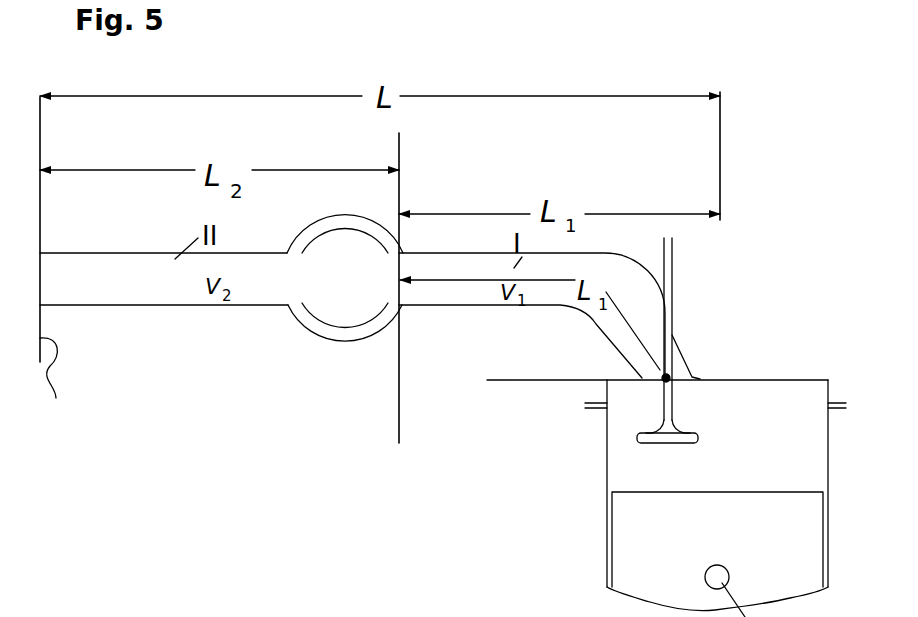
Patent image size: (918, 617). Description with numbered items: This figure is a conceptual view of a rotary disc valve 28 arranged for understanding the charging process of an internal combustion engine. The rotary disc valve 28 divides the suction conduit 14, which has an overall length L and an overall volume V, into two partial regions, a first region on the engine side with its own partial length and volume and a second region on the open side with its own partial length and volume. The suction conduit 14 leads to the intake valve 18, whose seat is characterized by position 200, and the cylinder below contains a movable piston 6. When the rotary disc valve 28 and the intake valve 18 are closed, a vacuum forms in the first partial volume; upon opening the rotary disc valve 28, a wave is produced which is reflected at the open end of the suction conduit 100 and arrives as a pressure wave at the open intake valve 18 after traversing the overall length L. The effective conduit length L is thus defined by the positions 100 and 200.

The open end of the suction conduit 100 is at (46, 392).
The suction conduit 14 is at (198, 314).
The rotary disc valve 28 is at (312, 343).
The intake valve 18 is at (690, 432).
The intake valve seat 200 is at (510, 380).
The piston 6 is at (632, 528).